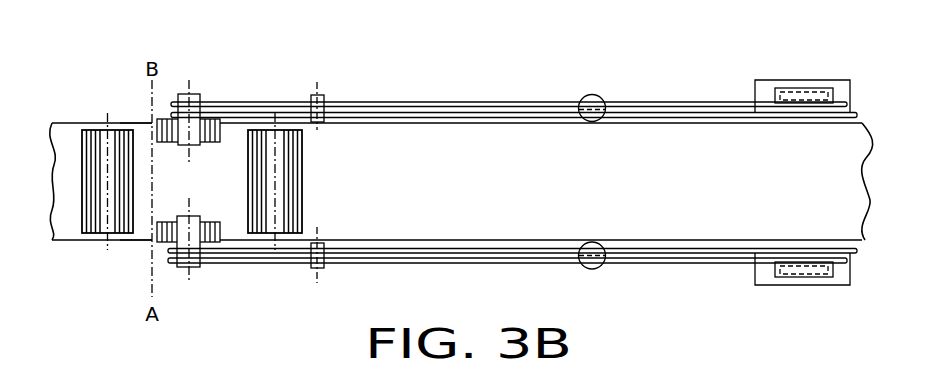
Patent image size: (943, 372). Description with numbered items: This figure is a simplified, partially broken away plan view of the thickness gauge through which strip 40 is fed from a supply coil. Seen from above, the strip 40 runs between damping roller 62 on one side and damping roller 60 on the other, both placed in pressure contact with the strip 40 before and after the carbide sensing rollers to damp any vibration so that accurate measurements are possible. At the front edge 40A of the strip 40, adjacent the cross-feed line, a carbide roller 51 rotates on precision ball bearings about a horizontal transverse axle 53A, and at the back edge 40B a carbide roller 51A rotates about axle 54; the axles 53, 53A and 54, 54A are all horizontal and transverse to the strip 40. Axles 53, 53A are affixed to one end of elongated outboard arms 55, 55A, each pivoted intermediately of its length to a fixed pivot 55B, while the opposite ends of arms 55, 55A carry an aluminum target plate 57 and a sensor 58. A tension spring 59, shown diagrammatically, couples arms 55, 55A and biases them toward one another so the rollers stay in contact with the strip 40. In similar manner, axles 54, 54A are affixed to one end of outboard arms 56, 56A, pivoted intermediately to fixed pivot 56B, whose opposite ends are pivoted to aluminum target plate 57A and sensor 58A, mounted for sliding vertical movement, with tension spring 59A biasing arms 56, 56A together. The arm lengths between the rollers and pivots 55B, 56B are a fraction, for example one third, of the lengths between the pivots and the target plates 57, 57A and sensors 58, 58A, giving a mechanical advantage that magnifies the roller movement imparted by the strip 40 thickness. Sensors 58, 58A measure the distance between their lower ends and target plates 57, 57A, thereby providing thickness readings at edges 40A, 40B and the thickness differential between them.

The strip 40 is at (386, 190).
The edge of strip 40A is at (152, 240).
The edge of strip 40B is at (152, 123).
The carbide roller 51 is at (221, 231).
The carbide roller 51A is at (220, 121).
The axle 53 is at (192, 216).
The axle 53A is at (196, 275).
The axle 54 is at (196, 158).
The axle 54A is at (198, 94).
The outboard arm 55 is at (478, 248).
The outboard arm 55A is at (502, 264).
The fixed pivot 55B is at (326, 268).
The outboard arm 56 is at (502, 118).
The outboard arm 56A is at (492, 102).
The fixed pivot 56B is at (326, 97).
The aluminum target plate 57 is at (755, 277).
The aluminum target plate 57A is at (755, 95).
The sensor 58 is at (800, 278).
The sensor 58A is at (805, 88).
The tension spring 59 is at (595, 269).
The tension spring 59A is at (594, 95).
The damping roller 60 is at (248, 142).
The damping roller 62 is at (82, 142).